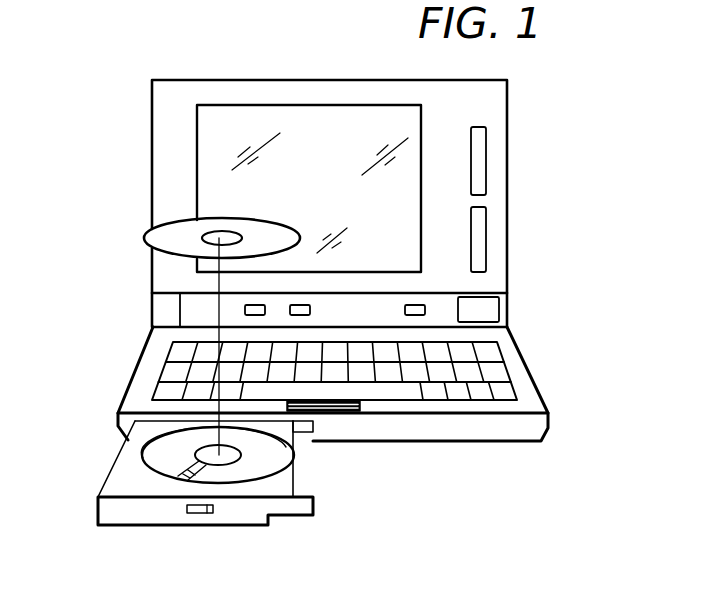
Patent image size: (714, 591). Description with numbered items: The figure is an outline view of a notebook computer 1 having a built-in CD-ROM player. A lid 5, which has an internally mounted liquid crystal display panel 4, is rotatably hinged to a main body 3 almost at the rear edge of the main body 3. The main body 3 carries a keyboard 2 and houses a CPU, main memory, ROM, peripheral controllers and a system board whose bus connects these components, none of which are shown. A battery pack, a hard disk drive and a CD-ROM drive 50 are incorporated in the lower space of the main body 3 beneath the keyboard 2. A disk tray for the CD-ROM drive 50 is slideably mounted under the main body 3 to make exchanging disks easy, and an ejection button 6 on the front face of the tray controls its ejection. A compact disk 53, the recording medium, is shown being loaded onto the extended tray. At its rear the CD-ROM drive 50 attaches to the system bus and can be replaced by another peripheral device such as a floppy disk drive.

The notebook computer 1 is at (553, 286).
The keyboard 2 is at (500, 369).
The main body 3 is at (543, 393).
The liquid crystal display panel 4 is at (283, 108).
The lid 5 is at (507, 165).
The ejection button 6 is at (202, 513).
The CD-ROM drive 50 is at (120, 537).
The compact disk 53 is at (158, 230).